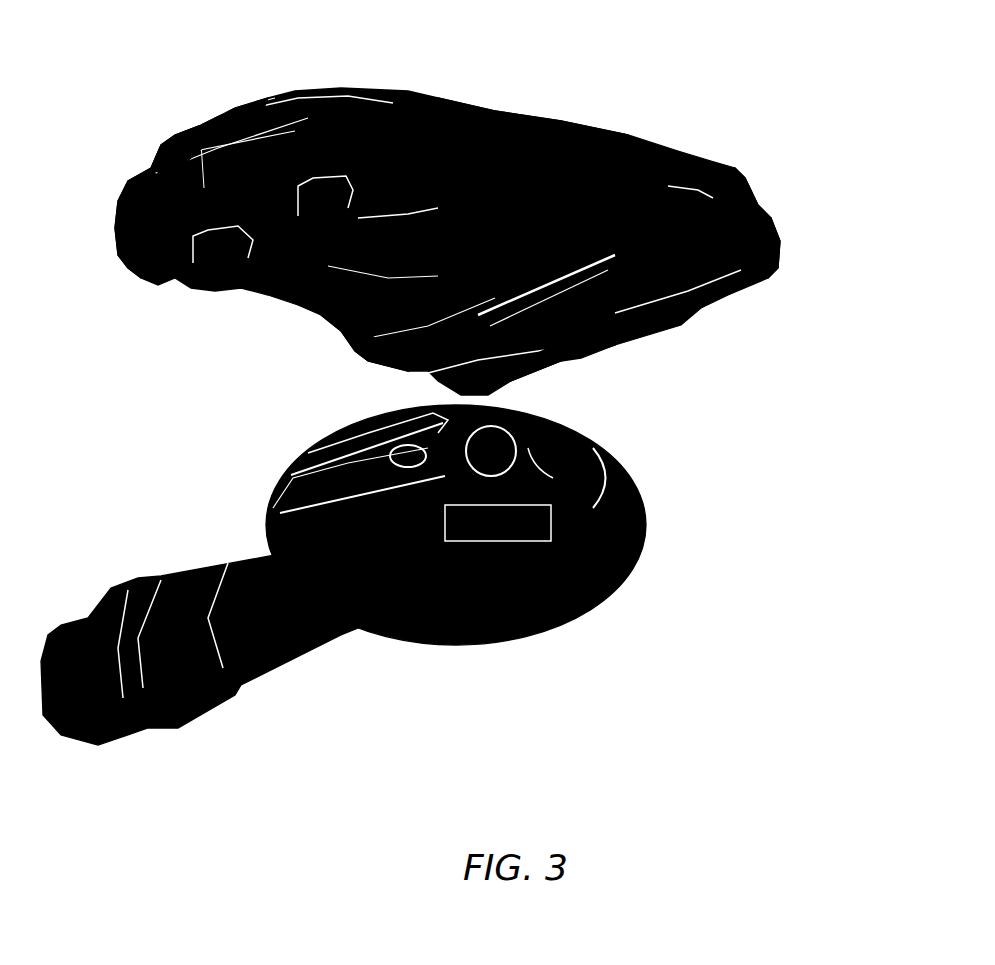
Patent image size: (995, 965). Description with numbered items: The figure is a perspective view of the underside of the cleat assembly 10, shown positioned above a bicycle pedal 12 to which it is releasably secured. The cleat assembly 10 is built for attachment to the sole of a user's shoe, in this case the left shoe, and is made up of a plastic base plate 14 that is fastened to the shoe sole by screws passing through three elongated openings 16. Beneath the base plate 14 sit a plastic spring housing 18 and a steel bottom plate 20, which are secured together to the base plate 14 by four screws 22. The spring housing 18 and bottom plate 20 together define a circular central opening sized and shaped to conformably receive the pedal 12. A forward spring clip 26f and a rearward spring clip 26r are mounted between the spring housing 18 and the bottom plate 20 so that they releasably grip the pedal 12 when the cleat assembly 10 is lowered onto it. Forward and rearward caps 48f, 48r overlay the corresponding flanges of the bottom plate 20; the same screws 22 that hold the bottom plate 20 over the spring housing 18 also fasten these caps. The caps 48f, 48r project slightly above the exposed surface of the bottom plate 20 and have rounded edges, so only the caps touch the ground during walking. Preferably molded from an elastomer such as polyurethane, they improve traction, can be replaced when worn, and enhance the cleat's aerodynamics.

The cleat assembly 10 is at (786, 315).
The bicycle pedal 12 is at (679, 584).
The base plate 14 is at (533, 107).
The elongated openings 16 is at (683, 143).
The spring housing 18 is at (333, 318).
The bottom plate 20 is at (750, 202).
The screws 22 is at (198, 130).
The forward spring clip 26f is at (490, 107).
The rearward spring clip 26r is at (580, 347).
The forward cap 48f is at (117, 237).
The rearward cap 48r is at (772, 228).